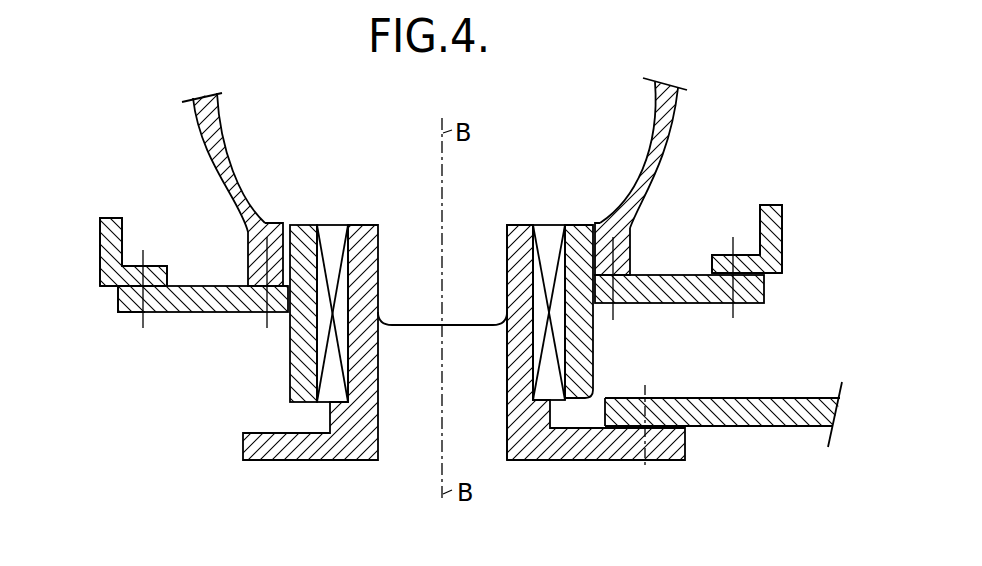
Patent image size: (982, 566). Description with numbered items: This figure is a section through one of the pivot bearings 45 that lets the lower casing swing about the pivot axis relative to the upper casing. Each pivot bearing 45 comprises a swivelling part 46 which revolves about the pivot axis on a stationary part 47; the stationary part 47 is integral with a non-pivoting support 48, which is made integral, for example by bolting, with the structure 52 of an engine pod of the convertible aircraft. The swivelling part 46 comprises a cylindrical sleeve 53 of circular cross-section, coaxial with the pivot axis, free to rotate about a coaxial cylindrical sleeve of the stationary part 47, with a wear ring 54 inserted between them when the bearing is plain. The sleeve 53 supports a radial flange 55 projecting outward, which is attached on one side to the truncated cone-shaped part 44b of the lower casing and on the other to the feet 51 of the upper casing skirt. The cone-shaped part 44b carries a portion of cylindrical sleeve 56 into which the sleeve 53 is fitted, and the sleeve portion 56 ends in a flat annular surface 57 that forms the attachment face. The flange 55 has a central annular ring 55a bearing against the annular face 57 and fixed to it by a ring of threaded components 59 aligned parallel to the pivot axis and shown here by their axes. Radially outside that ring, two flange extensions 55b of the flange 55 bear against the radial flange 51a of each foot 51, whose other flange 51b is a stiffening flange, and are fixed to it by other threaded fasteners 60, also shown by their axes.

The truncated cone-shaped part 44b is at (663, 103).
The pivot bearing 45 is at (287, 366).
The swivelling part 46 is at (599, 362).
The stationary part 47 is at (516, 248).
The non-pivoting support 48 is at (585, 440).
The foot 51 is at (98, 270).
The radial flange 51a is at (164, 265).
The stiffening flange 51b is at (112, 235).
The structure of an engine pod 52 is at (782, 412).
The cylindrical sleeve 53 is at (302, 242).
The wear ring 54 is at (546, 233).
The radial flange 55 is at (699, 295).
The central annular ring 55a is at (247, 300).
The flange extension 55b is at (125, 300).
The portion of cylindrical sleeve 56 is at (265, 240).
The flat annular surface 57 is at (262, 284).
The threaded component 59 is at (265, 328).
The threaded fastener 60 is at (143, 328).